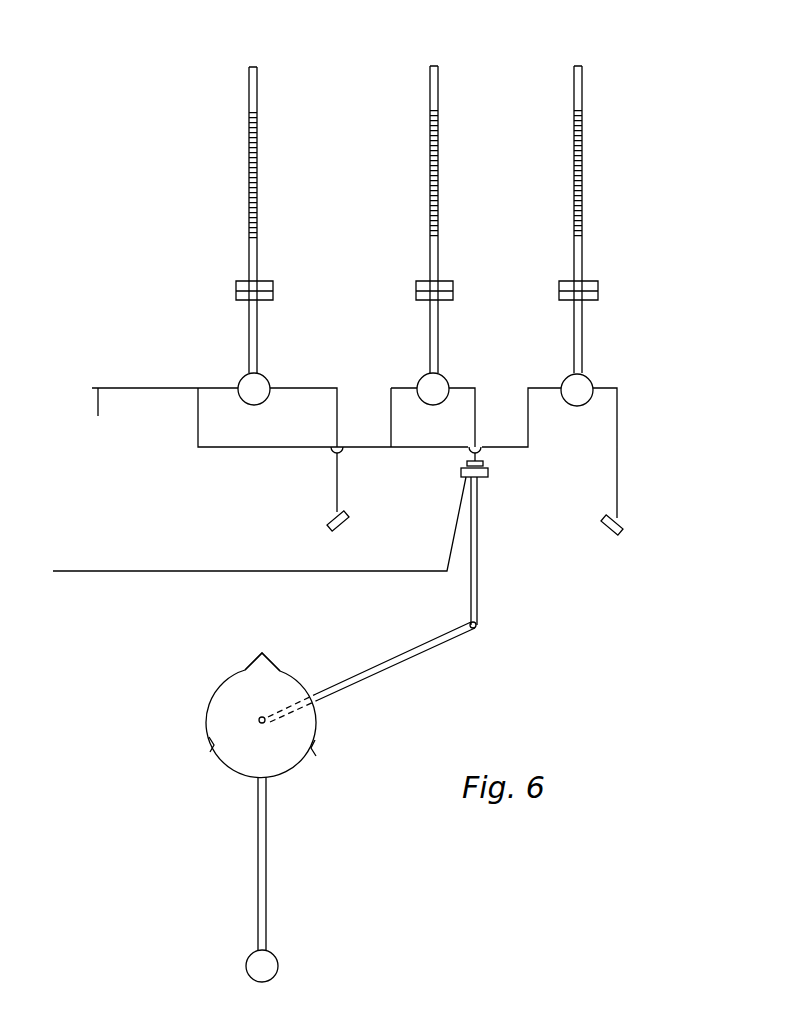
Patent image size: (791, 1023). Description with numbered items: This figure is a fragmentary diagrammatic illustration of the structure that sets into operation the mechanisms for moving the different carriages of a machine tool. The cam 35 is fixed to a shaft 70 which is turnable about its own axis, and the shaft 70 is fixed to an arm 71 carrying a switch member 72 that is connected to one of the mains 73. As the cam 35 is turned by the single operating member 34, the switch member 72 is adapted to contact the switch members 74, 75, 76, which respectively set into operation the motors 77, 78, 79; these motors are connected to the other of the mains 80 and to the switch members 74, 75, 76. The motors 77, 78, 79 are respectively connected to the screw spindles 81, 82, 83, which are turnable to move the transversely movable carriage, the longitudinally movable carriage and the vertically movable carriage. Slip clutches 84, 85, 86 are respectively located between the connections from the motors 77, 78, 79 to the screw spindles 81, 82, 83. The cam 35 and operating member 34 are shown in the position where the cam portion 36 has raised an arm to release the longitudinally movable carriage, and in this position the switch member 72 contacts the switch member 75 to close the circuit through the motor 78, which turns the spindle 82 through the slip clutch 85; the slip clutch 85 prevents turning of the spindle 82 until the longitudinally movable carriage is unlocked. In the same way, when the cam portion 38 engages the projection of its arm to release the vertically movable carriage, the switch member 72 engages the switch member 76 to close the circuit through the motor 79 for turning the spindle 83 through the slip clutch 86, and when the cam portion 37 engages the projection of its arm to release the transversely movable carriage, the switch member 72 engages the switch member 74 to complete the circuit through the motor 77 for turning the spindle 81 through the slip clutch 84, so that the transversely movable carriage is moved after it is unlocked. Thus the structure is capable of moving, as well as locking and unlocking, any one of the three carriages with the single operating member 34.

The operating member 34 is at (262, 840).
The cam 35 is at (247, 770).
The cam portion 36 is at (260, 664).
The cam portion 37 is at (218, 748).
The cam portion 38 is at (318, 752).
The shaft 70 is at (410, 655).
The arm 71 is at (477, 583).
The switch member 72 is at (488, 474).
The main 73 is at (117, 570).
The switch member 74 is at (623, 530).
The switch member 75 is at (484, 464).
The switch member 76 is at (352, 524).
The motor 77 is at (584, 389).
The motor 78 is at (438, 386).
The motor 79 is at (258, 386).
The main 80 is at (351, 453).
The screw spindle 81 is at (580, 70).
The screw spindle 82 is at (434, 69).
The screw spindle 83 is at (255, 70).
The slip clutch 84 is at (595, 283).
The slip clutch 85 is at (450, 283).
The slip clutch 86 is at (270, 283).